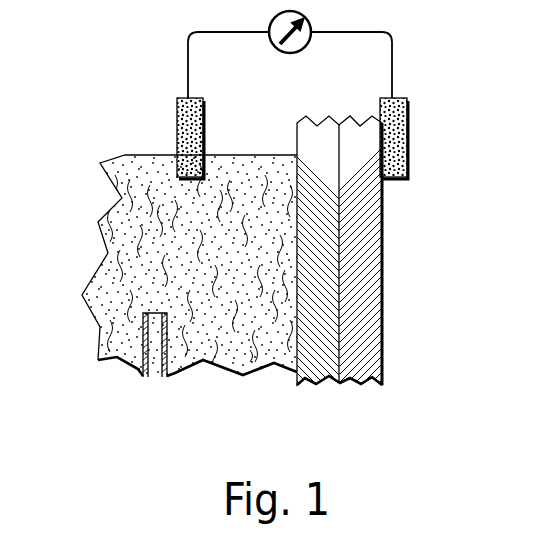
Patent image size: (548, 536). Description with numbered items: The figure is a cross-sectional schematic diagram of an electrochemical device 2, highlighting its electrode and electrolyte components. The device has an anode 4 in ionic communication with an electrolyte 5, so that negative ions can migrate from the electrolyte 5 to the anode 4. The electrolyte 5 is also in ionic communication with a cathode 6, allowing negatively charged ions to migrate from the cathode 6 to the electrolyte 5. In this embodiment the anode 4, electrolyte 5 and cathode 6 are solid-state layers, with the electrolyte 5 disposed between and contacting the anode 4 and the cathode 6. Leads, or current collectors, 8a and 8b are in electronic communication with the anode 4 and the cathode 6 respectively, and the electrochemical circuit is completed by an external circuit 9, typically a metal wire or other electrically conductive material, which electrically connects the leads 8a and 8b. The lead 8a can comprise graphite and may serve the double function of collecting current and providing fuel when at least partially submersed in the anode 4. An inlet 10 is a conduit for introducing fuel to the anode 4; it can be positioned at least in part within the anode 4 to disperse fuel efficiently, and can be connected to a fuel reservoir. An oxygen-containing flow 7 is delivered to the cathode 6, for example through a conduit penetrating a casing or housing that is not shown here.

The electrochemical device 2 is at (98, 68).
The anode 4 is at (82, 282).
The electrolyte 5 is at (315, 388).
The cathode 6 is at (387, 313).
The oxygen-containing flow 7 is at (418, 253).
The lead 8a is at (176, 126).
The lead 8b is at (408, 120).
The external circuit 9 is at (394, 43).
The inlet 10 is at (151, 377).